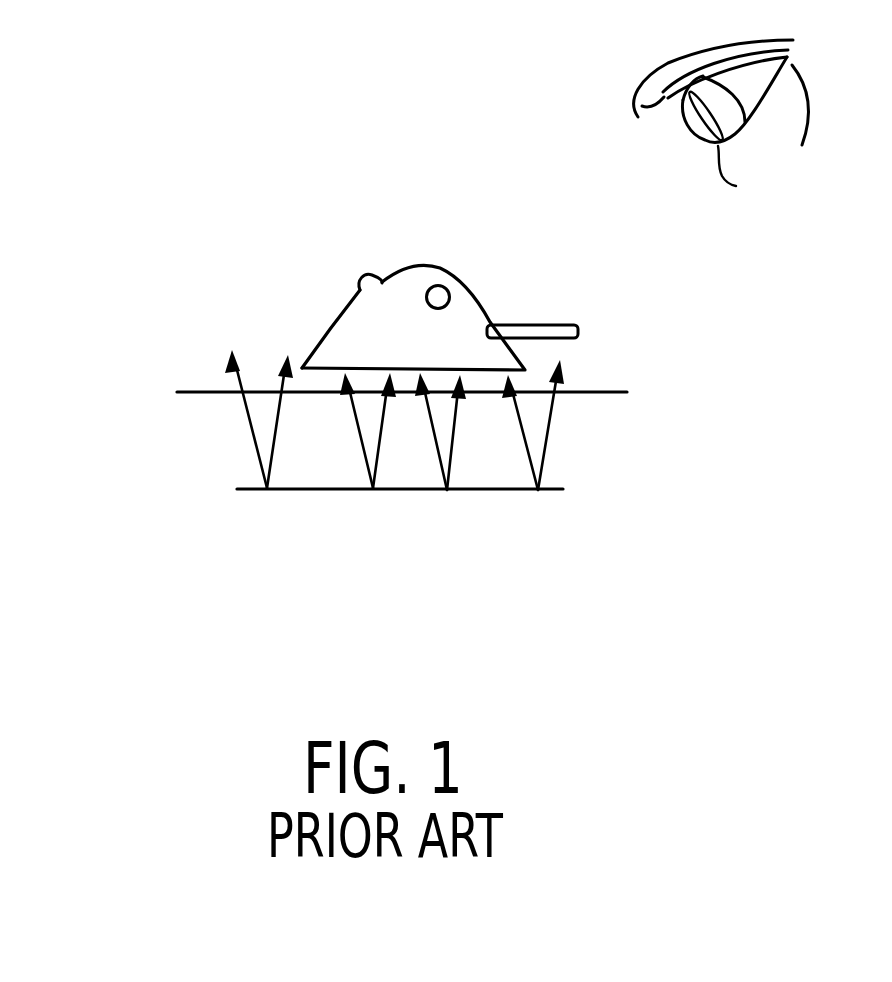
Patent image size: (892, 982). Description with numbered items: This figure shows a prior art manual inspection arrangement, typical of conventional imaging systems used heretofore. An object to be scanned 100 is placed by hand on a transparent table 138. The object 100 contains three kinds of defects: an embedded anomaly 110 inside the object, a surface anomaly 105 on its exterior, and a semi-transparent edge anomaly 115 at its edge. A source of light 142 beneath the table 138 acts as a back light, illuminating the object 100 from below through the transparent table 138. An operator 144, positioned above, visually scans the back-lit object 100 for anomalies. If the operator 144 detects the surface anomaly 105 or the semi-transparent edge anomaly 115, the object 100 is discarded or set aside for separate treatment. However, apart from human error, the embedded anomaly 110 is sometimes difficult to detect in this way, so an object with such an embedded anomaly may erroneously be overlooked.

The object to be scanned 100 is at (333, 318).
The surface anomaly 105 is at (365, 274).
The embedded anomaly 110 is at (411, 267).
The semi-transparent edge anomaly 115 is at (578, 331).
The transparent table 138 is at (178, 395).
The source of light 142 is at (291, 491).
The operator 144 is at (700, 136).